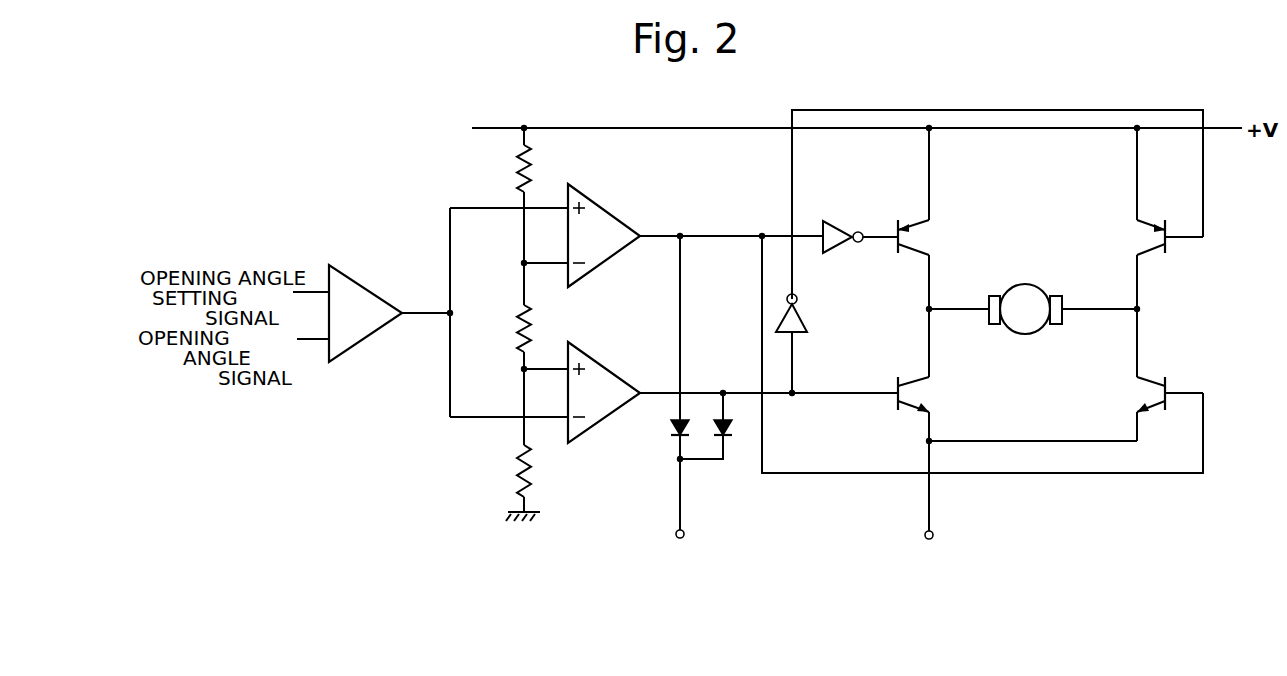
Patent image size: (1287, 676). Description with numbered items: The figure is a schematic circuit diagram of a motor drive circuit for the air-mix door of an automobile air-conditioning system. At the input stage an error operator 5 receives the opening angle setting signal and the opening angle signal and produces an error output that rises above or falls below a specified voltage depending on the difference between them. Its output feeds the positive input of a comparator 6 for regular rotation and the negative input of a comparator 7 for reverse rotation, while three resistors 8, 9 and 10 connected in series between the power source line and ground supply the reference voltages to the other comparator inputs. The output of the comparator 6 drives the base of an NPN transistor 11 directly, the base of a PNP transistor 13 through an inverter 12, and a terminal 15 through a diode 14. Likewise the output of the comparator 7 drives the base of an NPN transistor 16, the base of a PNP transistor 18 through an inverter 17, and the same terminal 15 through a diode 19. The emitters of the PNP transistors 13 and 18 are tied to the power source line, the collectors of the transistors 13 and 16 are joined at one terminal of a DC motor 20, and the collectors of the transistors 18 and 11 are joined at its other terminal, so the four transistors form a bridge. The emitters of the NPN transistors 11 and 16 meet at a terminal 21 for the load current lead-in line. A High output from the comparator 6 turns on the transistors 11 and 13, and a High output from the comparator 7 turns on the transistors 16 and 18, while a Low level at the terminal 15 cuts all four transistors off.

The error operator 5 is at (385, 293).
The comparator for regular rotation 6 is at (610, 205).
The comparator for reverse rotation 7 is at (604, 365).
The resistor 8 is at (514, 163).
The resistor 9 is at (514, 324).
The resistor 10 is at (530, 478).
The NPN transistor 11 is at (1141, 391).
The inverter 12 is at (832, 254).
The PNP transistor 13 is at (922, 238).
The diode 14 is at (672, 440).
The terminal 15 is at (684, 537).
The NPN transistor 16 is at (913, 392).
The inverter 17 is at (806, 322).
The PNP transistor 18 is at (1145, 238).
The diode 19 is at (733, 433).
The DC motor 20 is at (1030, 334).
The terminal 21 is at (931, 539).